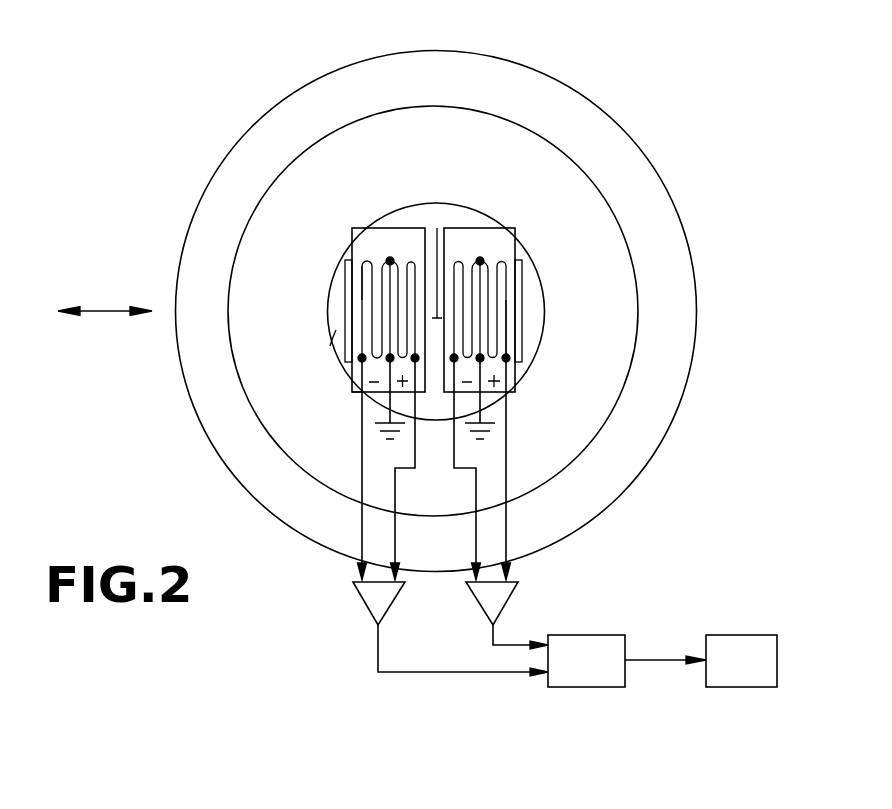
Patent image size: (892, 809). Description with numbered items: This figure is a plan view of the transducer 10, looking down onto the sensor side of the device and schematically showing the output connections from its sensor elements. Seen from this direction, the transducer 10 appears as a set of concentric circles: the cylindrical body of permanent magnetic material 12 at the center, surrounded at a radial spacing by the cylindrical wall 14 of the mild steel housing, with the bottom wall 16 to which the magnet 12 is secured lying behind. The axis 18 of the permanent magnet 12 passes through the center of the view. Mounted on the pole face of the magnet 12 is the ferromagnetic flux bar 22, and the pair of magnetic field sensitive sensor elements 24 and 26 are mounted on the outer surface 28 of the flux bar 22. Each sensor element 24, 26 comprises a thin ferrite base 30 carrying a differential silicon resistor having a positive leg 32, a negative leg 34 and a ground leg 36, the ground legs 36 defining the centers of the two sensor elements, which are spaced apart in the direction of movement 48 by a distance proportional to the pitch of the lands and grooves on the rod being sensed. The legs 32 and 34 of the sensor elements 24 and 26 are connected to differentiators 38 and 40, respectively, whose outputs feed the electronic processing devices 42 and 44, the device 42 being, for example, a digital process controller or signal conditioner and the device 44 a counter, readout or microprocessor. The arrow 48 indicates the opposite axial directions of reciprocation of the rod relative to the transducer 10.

The transducer 10 is at (655, 143).
The cylindrical body of permanent magnetic material 12 is at (556, 308).
The cylindrical wall 14 is at (643, 425).
The bottom wall 16 is at (633, 328).
The axis 18 is at (439, 228).
The ferromagnetic flux bar 22 is at (326, 348).
The sensor element 24 is at (346, 220).
The sensor element 26 is at (517, 221).
The outer surface 28 is at (347, 265).
The base 30 is at (352, 386).
The positive leg 32 is at (413, 262).
The negative leg 34 is at (455, 262).
The ground leg 36 is at (388, 310).
The differentiator 38 is at (487, 604).
The differentiator 40 is at (373, 604).
The electronic processing device 42 is at (597, 640).
The electronic processing device 44 is at (745, 640).
The arrow indicating direction of movement 48 is at (110, 310).